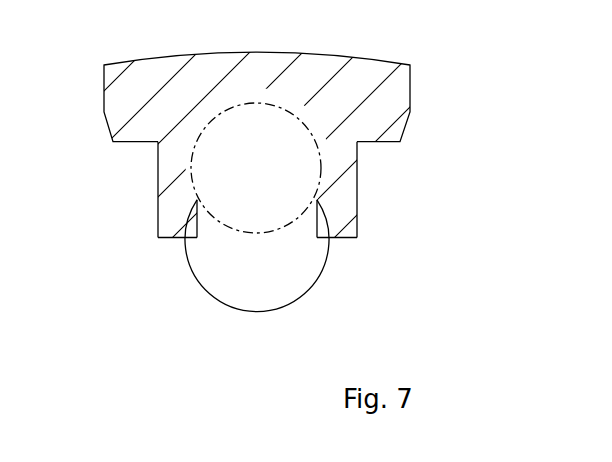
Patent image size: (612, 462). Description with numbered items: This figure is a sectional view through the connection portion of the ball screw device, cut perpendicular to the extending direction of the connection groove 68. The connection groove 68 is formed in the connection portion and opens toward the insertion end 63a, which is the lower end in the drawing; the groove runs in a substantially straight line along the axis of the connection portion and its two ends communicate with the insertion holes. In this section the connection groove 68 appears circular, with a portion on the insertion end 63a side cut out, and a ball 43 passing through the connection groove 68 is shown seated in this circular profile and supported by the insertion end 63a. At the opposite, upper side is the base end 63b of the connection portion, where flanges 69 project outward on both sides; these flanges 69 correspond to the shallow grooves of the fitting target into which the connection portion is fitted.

The ball 43 is at (247, 235).
The insertion end 63a is at (167, 228).
The base end 63b is at (170, 148).
The connection groove 68 is at (280, 88).
The flange 69 is at (118, 98).